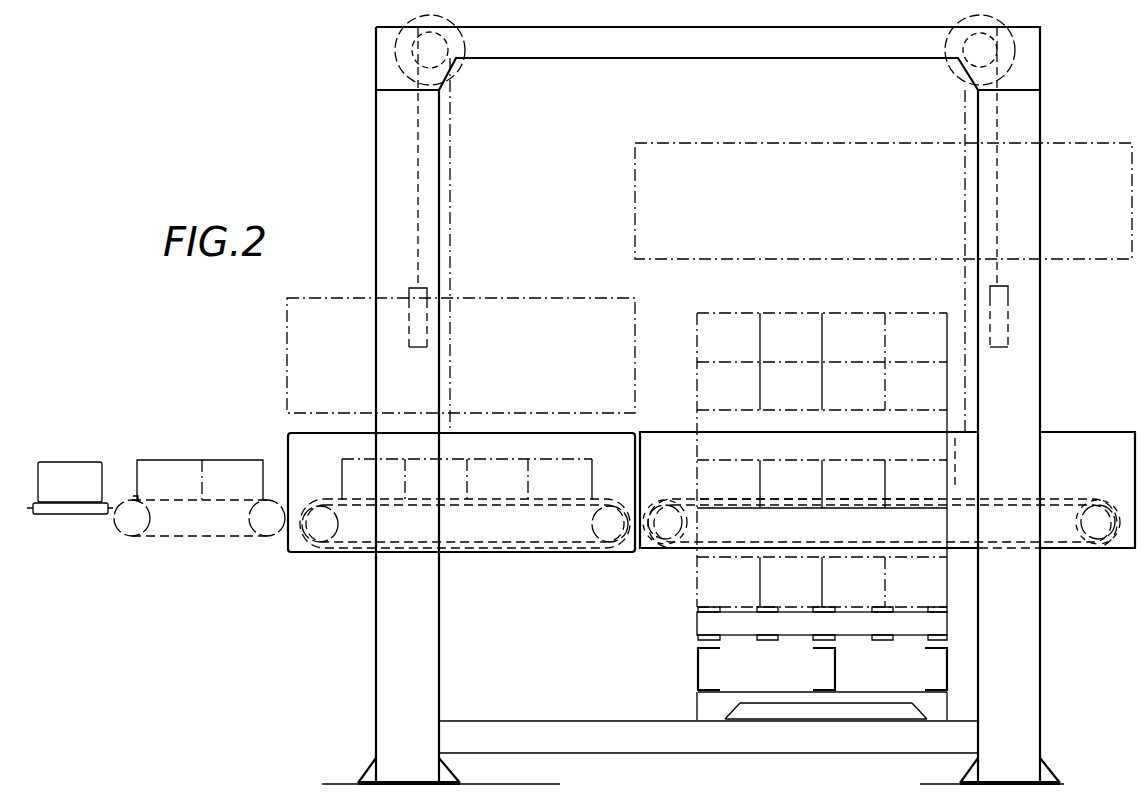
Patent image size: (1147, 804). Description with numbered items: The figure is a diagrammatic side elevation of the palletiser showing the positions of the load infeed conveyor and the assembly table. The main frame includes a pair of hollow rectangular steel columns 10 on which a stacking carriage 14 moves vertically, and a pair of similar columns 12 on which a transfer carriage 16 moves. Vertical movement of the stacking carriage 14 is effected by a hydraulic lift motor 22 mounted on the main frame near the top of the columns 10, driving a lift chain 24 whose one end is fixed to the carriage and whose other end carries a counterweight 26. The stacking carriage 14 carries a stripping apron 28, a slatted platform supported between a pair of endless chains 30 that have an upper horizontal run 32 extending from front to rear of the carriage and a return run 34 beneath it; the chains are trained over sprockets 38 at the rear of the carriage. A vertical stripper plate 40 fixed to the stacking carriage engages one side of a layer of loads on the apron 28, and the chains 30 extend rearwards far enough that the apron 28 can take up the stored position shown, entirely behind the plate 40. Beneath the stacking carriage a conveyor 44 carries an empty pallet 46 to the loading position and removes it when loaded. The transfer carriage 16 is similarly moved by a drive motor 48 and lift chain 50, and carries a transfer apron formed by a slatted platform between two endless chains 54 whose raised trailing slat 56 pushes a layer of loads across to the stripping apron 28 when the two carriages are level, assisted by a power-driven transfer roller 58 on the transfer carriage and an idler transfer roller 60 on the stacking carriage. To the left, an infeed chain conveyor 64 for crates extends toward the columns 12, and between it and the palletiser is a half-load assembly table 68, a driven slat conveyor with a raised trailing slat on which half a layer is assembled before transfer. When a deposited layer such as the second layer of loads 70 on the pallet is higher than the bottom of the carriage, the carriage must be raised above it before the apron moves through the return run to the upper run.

The columns 10 is at (1028, 219).
The columns 12 is at (390, 125).
The stacking carriage 14 is at (1097, 432).
The transfer carriage 16 is at (311, 432).
The hydraulic lift motor 22 is at (958, 72).
The lift chain 24 is at (963, 103).
The counterweight 26 is at (1010, 310).
The stripping apron 28 is at (1068, 502).
The endless chains 30 is at (688, 542).
The upper horizontal run 32 is at (722, 500).
The return run 34 is at (851, 548).
The sprockets 38 is at (1098, 540).
The stripper plate 40 is at (952, 448).
The conveyor 44 is at (935, 663).
The pallet 46 is at (912, 608).
The drive motor 48 is at (460, 70).
The lift chain 50 is at (451, 143).
The endless chains 54 is at (468, 547).
The trailing slat 56 is at (342, 498).
The transfer roller 58 is at (628, 500).
The idler transfer roller 60 is at (653, 500).
The infeed chain conveyor 64 is at (72, 510).
The half-load assembly table 68 is at (157, 500).
The second layer of loads 70 is at (697, 322).